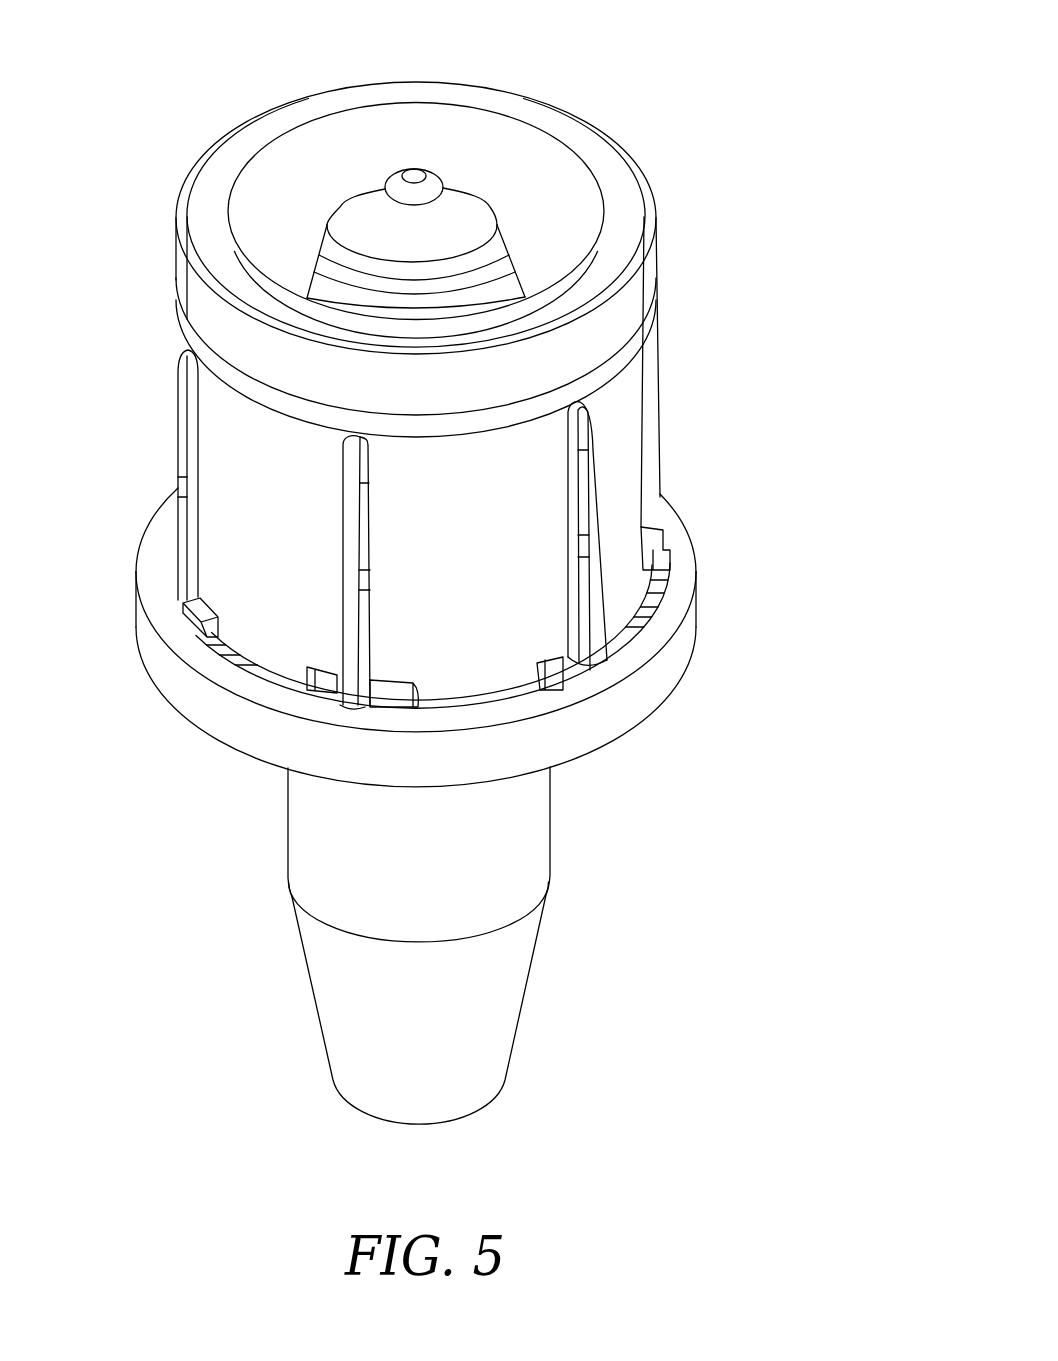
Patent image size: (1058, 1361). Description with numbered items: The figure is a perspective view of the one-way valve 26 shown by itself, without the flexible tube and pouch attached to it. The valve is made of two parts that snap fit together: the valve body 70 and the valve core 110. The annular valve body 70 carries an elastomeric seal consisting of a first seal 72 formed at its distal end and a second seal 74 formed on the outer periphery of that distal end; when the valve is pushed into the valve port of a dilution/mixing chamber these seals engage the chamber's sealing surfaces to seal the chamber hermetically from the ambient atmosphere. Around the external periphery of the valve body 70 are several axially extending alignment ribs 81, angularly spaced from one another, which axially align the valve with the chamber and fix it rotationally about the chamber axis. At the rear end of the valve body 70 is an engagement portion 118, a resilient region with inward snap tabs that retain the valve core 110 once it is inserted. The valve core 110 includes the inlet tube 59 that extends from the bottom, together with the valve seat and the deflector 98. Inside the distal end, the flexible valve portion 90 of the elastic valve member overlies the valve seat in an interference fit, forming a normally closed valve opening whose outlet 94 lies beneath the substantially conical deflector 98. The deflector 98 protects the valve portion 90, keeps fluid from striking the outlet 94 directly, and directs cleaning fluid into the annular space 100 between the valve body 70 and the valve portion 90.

The one-way valve 26 is at (716, 55).
The inlet tube 59 is at (553, 851).
The valve body 70 is at (243, 470).
The first seal 72 is at (540, 113).
The second seal 74 is at (643, 273).
The alignment ribs 81 is at (190, 560).
The valve portion 90 is at (307, 300).
The outlet 94 is at (323, 290).
The deflector 98 is at (411, 169).
The annular space 100 is at (462, 140).
The valve core 110 is at (275, 834).
The engagement portion 118 is at (670, 675).